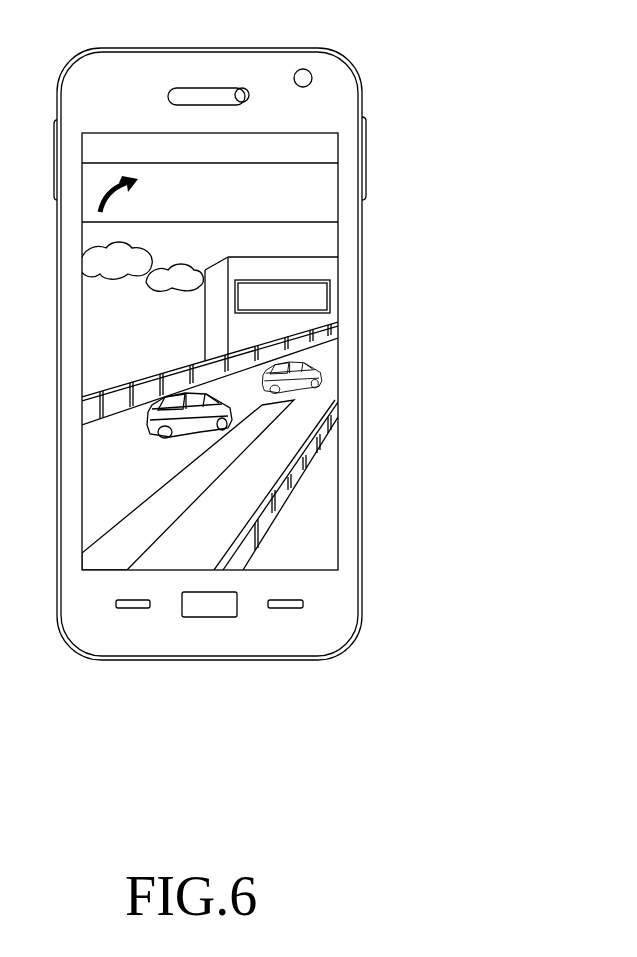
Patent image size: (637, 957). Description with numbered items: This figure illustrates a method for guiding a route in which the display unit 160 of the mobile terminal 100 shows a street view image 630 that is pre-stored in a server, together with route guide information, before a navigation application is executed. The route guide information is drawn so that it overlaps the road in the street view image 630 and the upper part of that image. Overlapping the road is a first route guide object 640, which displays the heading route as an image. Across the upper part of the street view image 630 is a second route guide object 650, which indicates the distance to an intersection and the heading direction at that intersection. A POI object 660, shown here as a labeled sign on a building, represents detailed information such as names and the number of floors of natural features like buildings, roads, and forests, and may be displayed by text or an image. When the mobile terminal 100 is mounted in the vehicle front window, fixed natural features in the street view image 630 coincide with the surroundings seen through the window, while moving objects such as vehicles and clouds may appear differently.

The mobile terminal 100 is at (379, 46).
The display unit 160 is at (336, 378).
The street view image 630 is at (316, 243).
The first route guide object 640 is at (235, 453).
The second route guide object 650 is at (323, 196).
The POI object 660 is at (330, 294).